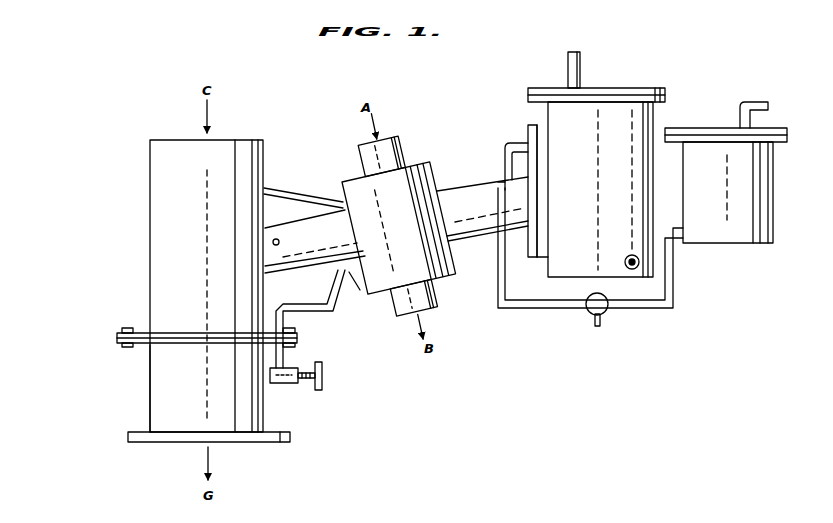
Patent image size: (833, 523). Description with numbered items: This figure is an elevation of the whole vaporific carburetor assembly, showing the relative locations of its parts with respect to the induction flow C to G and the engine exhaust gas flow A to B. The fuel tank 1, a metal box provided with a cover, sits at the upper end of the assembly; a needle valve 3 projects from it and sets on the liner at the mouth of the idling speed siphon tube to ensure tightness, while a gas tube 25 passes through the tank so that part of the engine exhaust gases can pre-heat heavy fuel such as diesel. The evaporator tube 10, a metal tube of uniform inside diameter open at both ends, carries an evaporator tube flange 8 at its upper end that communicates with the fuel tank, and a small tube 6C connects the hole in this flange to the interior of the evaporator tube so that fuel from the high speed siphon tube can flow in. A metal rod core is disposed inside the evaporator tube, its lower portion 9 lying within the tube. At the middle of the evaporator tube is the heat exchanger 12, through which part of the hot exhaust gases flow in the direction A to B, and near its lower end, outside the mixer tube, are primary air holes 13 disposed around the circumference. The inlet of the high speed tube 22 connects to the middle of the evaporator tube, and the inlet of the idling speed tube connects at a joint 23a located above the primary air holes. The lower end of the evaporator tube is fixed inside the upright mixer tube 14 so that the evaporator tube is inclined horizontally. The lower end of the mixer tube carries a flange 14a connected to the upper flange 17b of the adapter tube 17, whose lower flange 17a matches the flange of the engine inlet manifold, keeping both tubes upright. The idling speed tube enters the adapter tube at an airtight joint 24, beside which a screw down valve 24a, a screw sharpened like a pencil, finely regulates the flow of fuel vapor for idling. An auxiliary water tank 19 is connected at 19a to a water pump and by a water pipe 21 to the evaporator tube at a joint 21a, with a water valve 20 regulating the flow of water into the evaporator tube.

The fuel tank 1 is at (659, 118).
The needle valve 3 is at (581, 62).
The small tube 6C is at (505, 145).
The evaporator tube flange 8 is at (528, 130).
The lower portion of metal rod core 9 is at (543, 259).
The evaporator tube 10 is at (480, 243).
The heat exchanger 12 is at (430, 284).
The primary air holes 13 is at (279, 241).
The mixer tube 14 is at (150, 237).
The mixer tube flange 14a is at (117, 334).
The adapter tube 17 is at (152, 388).
The lower flange of adapter tube 17a is at (128, 441).
The upper flange of adapter tube 17b is at (117, 343).
The auxiliary water tank 19 is at (772, 196).
The water pump connection 19a is at (757, 103).
The water valve 20 is at (604, 313).
The water pipe 21 is at (506, 310).
The joint 21a is at (496, 182).
The high speed tube 22 is at (283, 190).
The joint 23a is at (348, 280).
The airtight joint 24 is at (292, 370).
The screw down valve 24a is at (322, 378).
The gas tube 25 is at (632, 255).